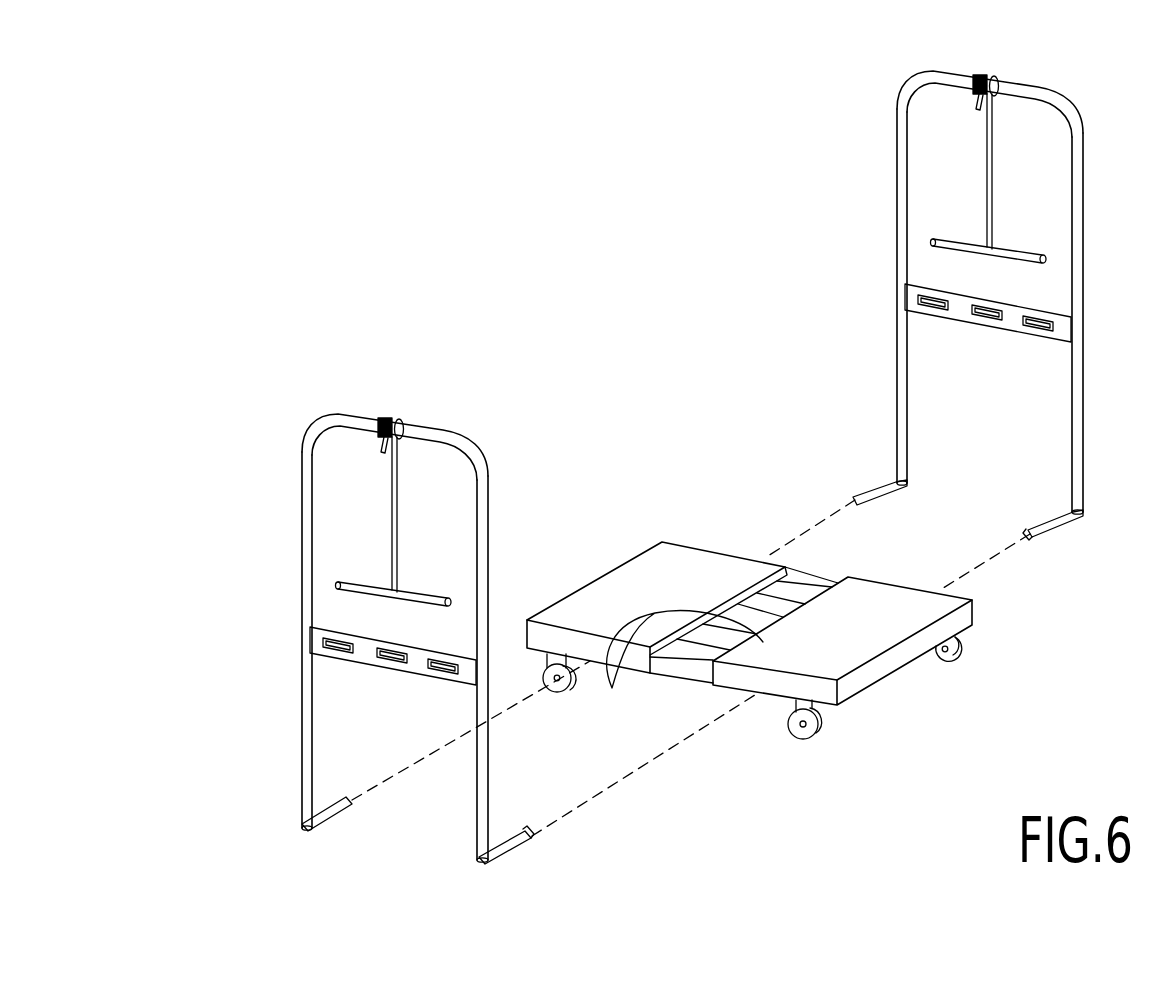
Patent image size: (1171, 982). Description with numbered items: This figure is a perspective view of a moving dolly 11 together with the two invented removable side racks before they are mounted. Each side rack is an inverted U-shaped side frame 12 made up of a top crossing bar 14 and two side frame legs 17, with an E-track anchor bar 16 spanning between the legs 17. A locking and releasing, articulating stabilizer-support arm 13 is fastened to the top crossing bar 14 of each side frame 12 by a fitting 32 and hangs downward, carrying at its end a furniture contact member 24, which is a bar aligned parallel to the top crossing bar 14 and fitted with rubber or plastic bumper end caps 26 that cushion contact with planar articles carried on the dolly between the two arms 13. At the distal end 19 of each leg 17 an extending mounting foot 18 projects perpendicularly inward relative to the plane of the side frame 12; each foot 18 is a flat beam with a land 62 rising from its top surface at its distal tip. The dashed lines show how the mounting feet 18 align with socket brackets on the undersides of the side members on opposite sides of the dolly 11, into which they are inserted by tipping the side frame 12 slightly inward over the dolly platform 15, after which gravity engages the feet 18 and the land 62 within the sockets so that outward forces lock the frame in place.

The moving dolly 11 is at (918, 697).
The inverted U-shaped side frame 12 is at (697, 475).
The articulating stabilizer-support arm 13 is at (400, 494).
The top crossing bar 14 is at (447, 430).
The dolly platform 15 is at (680, 670).
The E-track anchor bar 16 is at (394, 676).
The side frame leg 17 is at (300, 717).
The mounting foot 18 is at (338, 826).
The distal end 19 is at (300, 829).
The furniture contact member 24 is at (685, 391).
The bumper end cap 26 is at (338, 581).
The clamp 32 is at (394, 420).
The land 62 is at (514, 828).